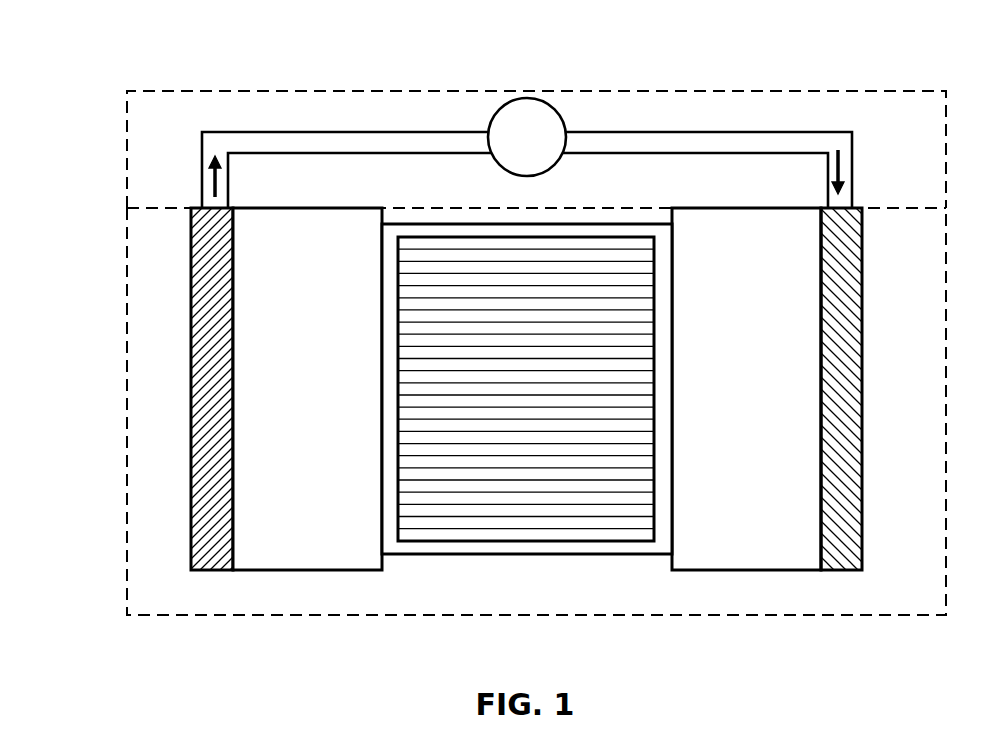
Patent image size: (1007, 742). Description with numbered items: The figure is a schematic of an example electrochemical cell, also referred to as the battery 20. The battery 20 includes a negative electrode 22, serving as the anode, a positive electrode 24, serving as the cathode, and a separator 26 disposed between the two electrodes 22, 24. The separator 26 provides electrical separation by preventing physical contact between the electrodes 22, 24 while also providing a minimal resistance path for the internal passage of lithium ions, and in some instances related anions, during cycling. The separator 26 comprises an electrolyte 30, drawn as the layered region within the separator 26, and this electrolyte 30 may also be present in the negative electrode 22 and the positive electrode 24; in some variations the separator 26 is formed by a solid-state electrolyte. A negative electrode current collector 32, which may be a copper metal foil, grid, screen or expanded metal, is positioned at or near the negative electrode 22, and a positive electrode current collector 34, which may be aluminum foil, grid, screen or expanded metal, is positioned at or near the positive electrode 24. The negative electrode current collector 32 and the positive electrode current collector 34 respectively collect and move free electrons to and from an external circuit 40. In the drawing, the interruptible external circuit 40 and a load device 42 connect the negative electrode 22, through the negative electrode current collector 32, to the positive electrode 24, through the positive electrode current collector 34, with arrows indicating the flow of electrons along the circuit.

The electrochemical cell 20 is at (123, 284).
The negative electrode 22 is at (293, 359).
The positive electrode 24 is at (735, 354).
The separator 26 is at (522, 554).
The electrolyte 30 is at (515, 386).
The negative electrode current collector 32 is at (191, 288).
The positive electrode current collector 34 is at (862, 283).
The external circuit 40 is at (293, 90).
The load device 42 is at (527, 153).